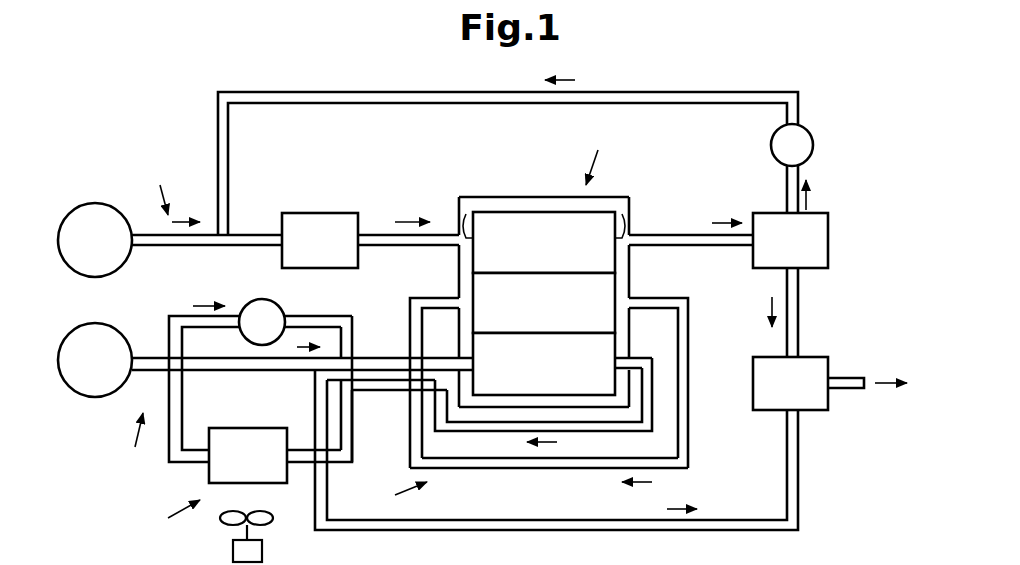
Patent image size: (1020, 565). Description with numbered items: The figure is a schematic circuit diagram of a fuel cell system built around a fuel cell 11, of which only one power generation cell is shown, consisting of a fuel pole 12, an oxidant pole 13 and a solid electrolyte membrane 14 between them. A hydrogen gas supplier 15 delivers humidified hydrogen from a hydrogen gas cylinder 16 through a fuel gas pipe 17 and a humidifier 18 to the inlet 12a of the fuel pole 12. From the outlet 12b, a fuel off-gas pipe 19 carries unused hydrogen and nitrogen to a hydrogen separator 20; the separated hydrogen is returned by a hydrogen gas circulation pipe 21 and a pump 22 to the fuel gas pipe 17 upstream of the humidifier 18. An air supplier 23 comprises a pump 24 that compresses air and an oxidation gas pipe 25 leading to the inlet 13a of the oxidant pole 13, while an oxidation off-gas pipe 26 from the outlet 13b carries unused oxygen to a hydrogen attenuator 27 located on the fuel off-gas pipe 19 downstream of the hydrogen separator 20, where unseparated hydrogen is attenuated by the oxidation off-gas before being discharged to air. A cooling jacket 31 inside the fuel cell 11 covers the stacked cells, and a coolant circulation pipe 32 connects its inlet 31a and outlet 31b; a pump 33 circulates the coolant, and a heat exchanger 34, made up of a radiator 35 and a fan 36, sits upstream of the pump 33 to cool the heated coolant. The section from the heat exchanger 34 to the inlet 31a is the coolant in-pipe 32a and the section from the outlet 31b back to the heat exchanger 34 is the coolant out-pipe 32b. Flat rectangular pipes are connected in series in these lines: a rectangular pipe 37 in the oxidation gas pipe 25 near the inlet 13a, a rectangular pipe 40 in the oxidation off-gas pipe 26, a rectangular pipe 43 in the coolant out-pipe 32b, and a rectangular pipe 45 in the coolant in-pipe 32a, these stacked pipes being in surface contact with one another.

The fuel cell 11 is at (592, 152).
The fuel pole 12 is at (544, 242).
The inlet of the fuel pole 12a is at (465, 214).
The outlet of the fuel pole 12b is at (623, 214).
The oxidant pole 13 is at (544, 364).
The inlet of the oxidant pole 13a is at (455, 373).
The outlet of the oxidant pole 13b is at (644, 362).
The solid electrolyte membrane 14 is at (544, 303).
The hydrogen gas supplier 15 is at (168, 187).
The hydrogen gas cylinder 16 is at (98, 203).
The fuel gas pipe 17 is at (185, 246).
The humidifier 18 is at (320, 213).
The fuel off-gas pipe 19 is at (685, 235).
The hydrogen separator 20 is at (829, 243).
The hydrogen gas circulation pipe 21 is at (510, 92).
The pump 22 is at (813, 147).
The air supplier 23 is at (228, 417).
The pump 24 is at (95, 398).
The oxidation gas pipe 25 is at (217, 371).
The oxidation off-gas pipe 26 is at (572, 431).
The hydrogen attenuator 27 is at (753, 383).
The cooling jacket 31 is at (545, 197).
The inlet of the cooling jacket 31a is at (453, 300).
The outlet of the cooling jacket 31b is at (635, 300).
The coolant circulation pipe 32 is at (393, 500).
The coolant in-pipe 32a is at (305, 316).
The coolant out-pipe 32b is at (510, 468).
The pump 33 is at (262, 299).
The heat exchanger 34 is at (166, 520).
The radiator 35 is at (265, 428).
The fan 36 is at (233, 548).
The rectangular pipe 37 is at (394, 358).
The rectangular pipe 40 is at (394, 380).
The rectangular pipe 43 is at (368, 393).
The rectangular pipe 45 is at (361, 350).